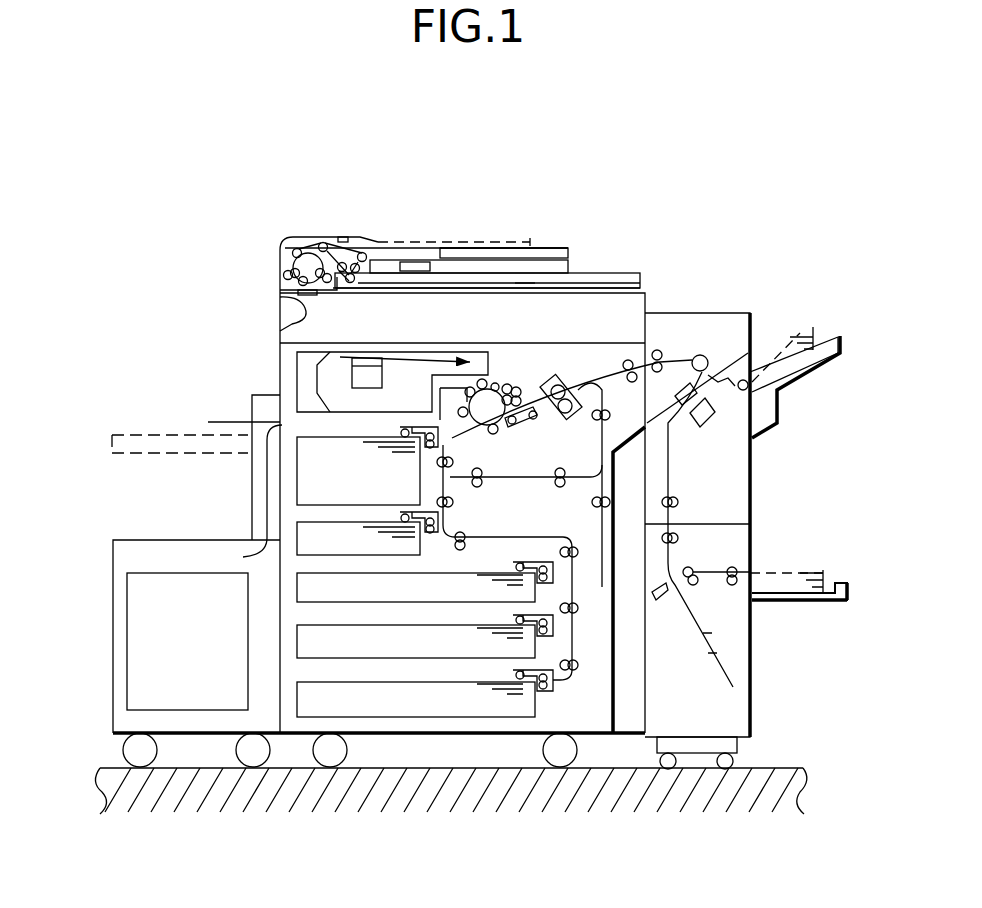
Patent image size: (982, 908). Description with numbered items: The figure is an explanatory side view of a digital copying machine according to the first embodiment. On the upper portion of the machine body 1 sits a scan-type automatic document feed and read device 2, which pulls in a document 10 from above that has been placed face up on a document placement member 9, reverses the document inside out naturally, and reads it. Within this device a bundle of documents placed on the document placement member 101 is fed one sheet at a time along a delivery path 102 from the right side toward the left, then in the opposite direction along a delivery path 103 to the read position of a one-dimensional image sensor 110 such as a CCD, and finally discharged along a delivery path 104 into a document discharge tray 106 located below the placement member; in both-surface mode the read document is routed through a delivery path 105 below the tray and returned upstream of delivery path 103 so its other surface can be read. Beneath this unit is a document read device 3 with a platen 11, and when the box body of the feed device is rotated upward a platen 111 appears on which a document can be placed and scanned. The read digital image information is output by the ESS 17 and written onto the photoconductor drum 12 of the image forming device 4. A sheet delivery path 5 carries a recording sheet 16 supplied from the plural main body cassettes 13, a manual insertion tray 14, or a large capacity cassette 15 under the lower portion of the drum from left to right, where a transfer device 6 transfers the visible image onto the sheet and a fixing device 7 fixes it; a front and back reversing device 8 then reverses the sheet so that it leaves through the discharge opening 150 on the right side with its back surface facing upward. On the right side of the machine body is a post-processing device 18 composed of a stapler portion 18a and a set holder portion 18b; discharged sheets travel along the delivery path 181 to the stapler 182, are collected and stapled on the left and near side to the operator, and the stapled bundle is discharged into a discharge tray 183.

The machine body 1 is at (268, 320).
The automatic document feed and read device 2 is at (275, 238).
The document read device 3 is at (423, 284).
The image forming device 4 is at (520, 383).
The sheet delivery path 5 is at (459, 446).
The transfer device 6 is at (512, 433).
The fixing device 7 is at (572, 371).
The front and back reversing device 8 is at (603, 552).
The document placement member 9 is at (557, 247).
The document 10 is at (477, 237).
The platen 11 is at (380, 287).
The photoconductor drum 12 is at (497, 386).
The main body cassettes 13 is at (297, 533).
The manual insertion tray 14 is at (130, 430).
The large capacity cassette 15 is at (135, 628).
The recording sheet 16 is at (810, 327).
The ESS (Electric Sub-system) 17 is at (297, 373).
The post-processing device 18 is at (737, 313).
The stapler portion 18a is at (740, 350).
The set holder portion 18b is at (718, 633).
The document placement member 101 is at (490, 247).
The delivery path 102 is at (325, 246).
The delivery path 103 is at (290, 265).
The delivery path 104 is at (353, 252).
The delivery path 105 is at (413, 280).
The document discharge tray 106 is at (460, 272).
The one-dimensional image sensor 110 is at (280, 330).
The platen 111 is at (523, 286).
The discharge opening 150 is at (658, 350).
The delivery path 181 is at (700, 355).
The stapler 182 is at (700, 425).
The discharge tray 183 is at (832, 335).